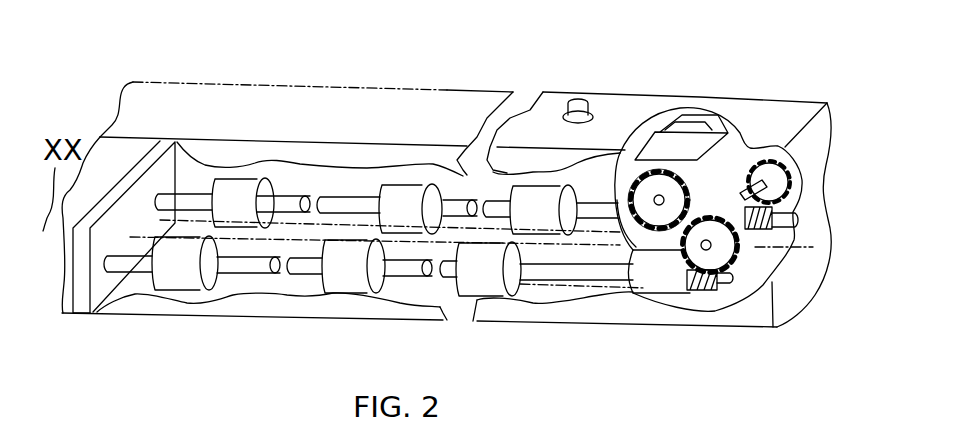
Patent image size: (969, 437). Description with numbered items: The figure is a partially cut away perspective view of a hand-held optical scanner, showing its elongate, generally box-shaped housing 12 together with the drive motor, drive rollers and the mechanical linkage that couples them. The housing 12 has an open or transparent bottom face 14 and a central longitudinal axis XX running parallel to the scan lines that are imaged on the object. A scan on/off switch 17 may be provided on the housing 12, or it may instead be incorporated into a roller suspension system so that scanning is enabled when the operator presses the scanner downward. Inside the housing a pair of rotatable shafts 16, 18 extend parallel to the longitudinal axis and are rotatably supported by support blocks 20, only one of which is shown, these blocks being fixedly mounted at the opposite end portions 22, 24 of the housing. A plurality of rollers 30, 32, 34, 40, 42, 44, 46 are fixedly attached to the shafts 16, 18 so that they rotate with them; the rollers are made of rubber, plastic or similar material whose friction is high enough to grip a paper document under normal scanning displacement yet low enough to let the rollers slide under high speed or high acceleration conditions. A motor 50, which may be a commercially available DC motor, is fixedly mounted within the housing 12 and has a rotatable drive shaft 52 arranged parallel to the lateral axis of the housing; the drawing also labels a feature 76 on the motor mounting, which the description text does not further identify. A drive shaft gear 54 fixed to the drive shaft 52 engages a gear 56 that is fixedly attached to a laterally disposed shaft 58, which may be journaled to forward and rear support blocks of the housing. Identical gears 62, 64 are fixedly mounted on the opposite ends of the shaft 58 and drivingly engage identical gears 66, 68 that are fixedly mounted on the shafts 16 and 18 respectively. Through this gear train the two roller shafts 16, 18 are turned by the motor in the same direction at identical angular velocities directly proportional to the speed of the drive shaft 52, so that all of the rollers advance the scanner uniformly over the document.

The housing 12 is at (222, 93).
The bottom face 14 is at (230, 288).
The rotatable shaft 16 is at (355, 200).
The scan on/off switch 17 is at (581, 100).
The rotatable shaft 18 is at (397, 274).
The support block 20 is at (82, 303).
The end portion 22 is at (100, 137).
The end portion 24 is at (821, 132).
The roller 30 is at (248, 182).
The roller 32 is at (418, 193).
The roller 34 is at (553, 193).
The roller 40 is at (167, 268).
The roller 42 is at (333, 273).
The roller 44 is at (473, 287).
The roller 46 is at (629, 228).
The motor 50 is at (685, 150).
The drive shaft 52 is at (659, 196).
The drive shaft gear 54 is at (655, 203).
The gear 56 is at (740, 240).
The laterally disposed shaft 58 is at (763, 158).
The gear 62 is at (682, 235).
The gear 64 is at (780, 157).
The gear 66 is at (705, 276).
The gear 68 is at (771, 242).
The boss 76 is at (707, 127).